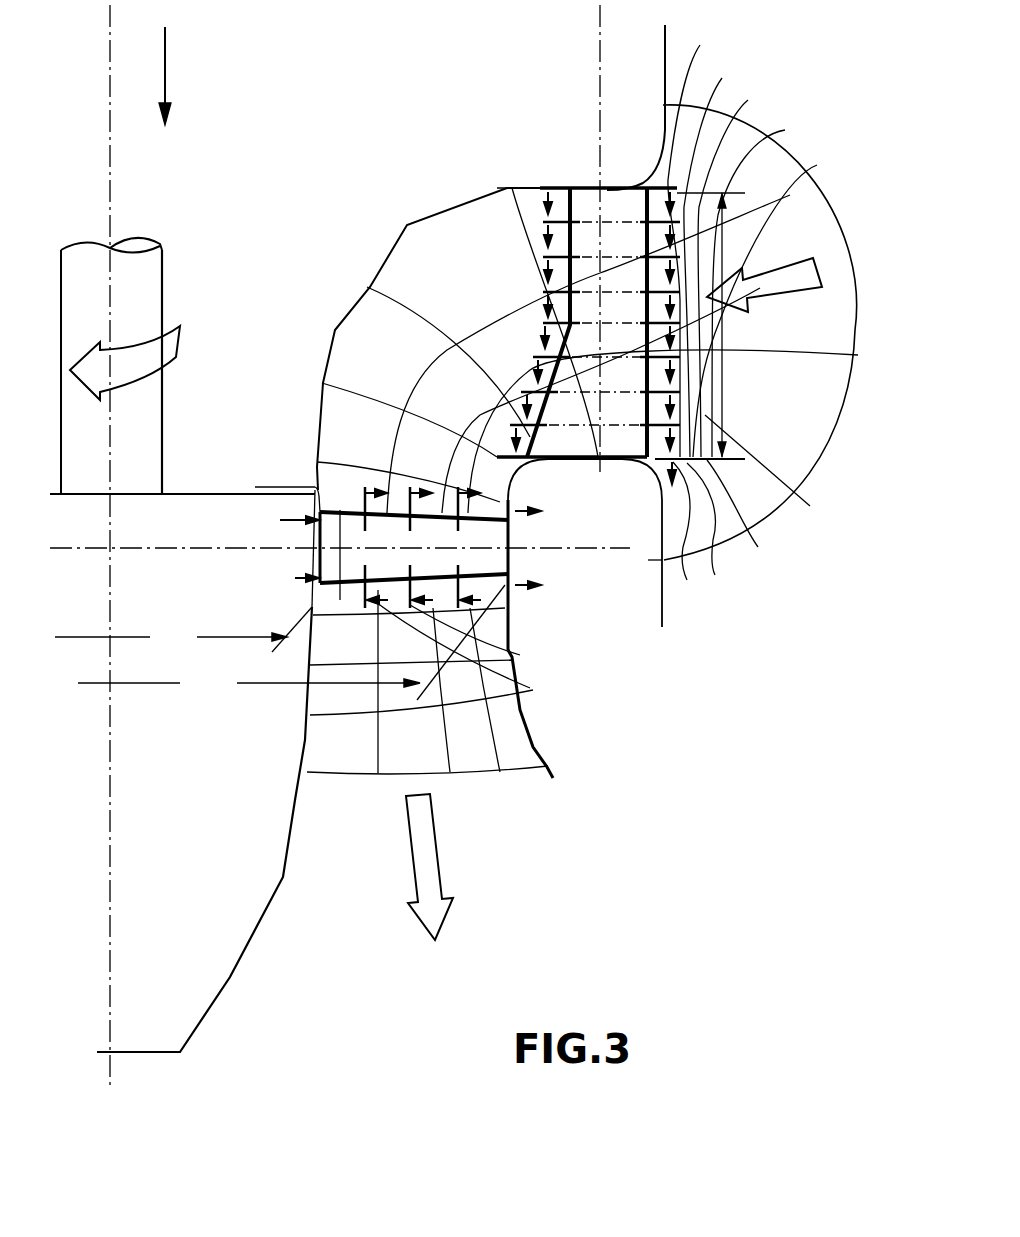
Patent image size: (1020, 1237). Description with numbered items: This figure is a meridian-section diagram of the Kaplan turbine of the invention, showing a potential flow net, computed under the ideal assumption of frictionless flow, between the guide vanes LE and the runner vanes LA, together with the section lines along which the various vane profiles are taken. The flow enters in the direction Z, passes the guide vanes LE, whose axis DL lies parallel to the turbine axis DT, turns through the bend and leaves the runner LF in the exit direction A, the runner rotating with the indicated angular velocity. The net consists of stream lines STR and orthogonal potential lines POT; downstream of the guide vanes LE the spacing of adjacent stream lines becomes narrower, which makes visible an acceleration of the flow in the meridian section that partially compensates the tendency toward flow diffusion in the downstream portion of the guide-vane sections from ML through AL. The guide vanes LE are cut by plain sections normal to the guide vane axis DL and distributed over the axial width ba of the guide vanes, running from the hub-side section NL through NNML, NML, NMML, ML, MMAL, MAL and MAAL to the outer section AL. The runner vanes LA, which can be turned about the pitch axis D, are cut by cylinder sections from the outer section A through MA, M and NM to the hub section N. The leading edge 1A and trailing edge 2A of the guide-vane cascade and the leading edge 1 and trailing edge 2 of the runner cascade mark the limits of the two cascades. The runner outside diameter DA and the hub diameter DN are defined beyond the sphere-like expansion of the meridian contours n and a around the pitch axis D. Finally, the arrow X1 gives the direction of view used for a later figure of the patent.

The direction of view X1 is at (165, 65).
The turbine axis DT is at (110, 197).
The pitch axis D is at (205, 556).
The hub diameter DN is at (183, 631).
The runner outside diameter DA is at (291, 645).
The hub cylinder section of runner vane N is at (295, 578).
The leading edge of runner cascade 1 is at (340, 510).
The trailing edge of runner cascade 2 is at (340, 590).
The trailing edge of guide vane cascade 2A is at (549, 186).
The leading edge of guide vane cascade 1A is at (695, 354).
The guide vane axis DL is at (597, 124).
The hub-side plain section of guide vane NL is at (701, 237).
The plain section of guide vane NNML is at (746, 256).
The plain section of guide vane NML is at (758, 272).
The plain section of guide vane NMML is at (795, 291).
The middle plain section of guide vane ML is at (777, 308).
The plain section of guide vane MMAL is at (693, 372).
The plain section of guide vane MAL is at (767, 490).
The plain section of guide vane MAAL is at (738, 541).
The outer plain section of guide vane AL is at (691, 544).
The direction of incoming flow Z is at (795, 285).
The axial width of guide vanes ba is at (722, 413).
The guide vanes LE is at (563, 462).
The runner vanes LA is at (500, 538).
The direction of exiting flow and outer cylinder section A is at (510, 587).
The cylinder section of runner vane MA is at (510, 623).
The middle cylinder section of runner vane M is at (505, 651).
The cylinder section of runner vane NM is at (507, 680).
The hub meridian contour n is at (302, 746).
The potential lines POT is at (344, 773).
The stream lines STR is at (383, 739).
The outer meridian contour a is at (552, 753).
The runner LF is at (185, 993).